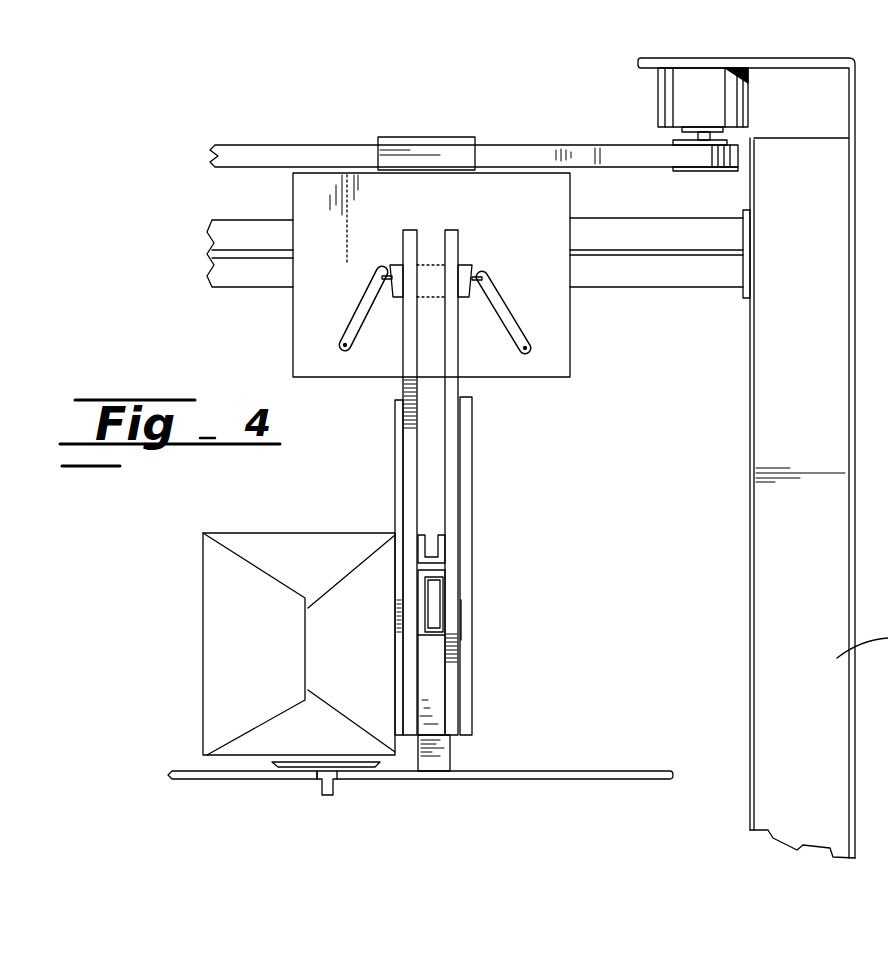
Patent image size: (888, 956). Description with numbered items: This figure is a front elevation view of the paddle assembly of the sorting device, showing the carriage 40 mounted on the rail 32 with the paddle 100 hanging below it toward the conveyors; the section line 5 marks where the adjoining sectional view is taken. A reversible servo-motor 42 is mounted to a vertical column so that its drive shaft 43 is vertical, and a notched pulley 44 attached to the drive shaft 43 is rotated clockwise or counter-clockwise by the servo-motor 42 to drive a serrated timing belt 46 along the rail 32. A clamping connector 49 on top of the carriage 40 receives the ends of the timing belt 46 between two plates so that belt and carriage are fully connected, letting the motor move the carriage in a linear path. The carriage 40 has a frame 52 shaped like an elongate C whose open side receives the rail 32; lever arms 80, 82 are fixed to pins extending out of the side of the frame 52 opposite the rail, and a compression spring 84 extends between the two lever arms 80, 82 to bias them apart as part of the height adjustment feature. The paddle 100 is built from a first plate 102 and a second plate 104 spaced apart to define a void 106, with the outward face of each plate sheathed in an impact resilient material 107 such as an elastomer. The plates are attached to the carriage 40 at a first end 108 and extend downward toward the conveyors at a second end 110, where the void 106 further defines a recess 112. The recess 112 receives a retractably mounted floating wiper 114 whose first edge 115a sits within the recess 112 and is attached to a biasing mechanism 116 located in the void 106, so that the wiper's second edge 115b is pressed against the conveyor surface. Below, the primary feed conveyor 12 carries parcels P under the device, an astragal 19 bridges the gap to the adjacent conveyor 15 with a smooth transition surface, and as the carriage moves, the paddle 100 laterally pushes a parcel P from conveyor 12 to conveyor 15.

The section line 5- 5 is at (480, 87).
The primary feed conveyor 12 is at (452, 782).
The conveyor 15 is at (262, 782).
The astragal 19 is at (335, 795).
The rail 32 is at (655, 272).
The carriage 40 is at (582, 378).
The reversible servo-motor 42 is at (660, 105).
The servo-motor drive shaft 43 is at (683, 133).
The notched pulley 44 is at (700, 172).
The serrated timing belt 46 is at (536, 140).
The clamping connector 49 is at (385, 135).
The frame 52 is at (303, 340).
The lever arm 80 is at (363, 305).
The lever arm 82 is at (490, 283).
The compression spring 84 is at (470, 293).
The paddle 100 is at (507, 673).
The first plate 102 is at (455, 243).
The second plate 104 is at (322, 227).
The void 106 is at (430, 455).
The impact resilient material 107 is at (397, 427).
The first end 108 is at (406, 231).
The second end 110 is at (455, 760).
The recess 112 is at (440, 603).
The floating wiper 114 is at (438, 708).
The first edge 115a is at (463, 622).
The second edge 115b is at (452, 767).
The biasing mechanism 116 is at (445, 575).
The parcel P is at (200, 663).